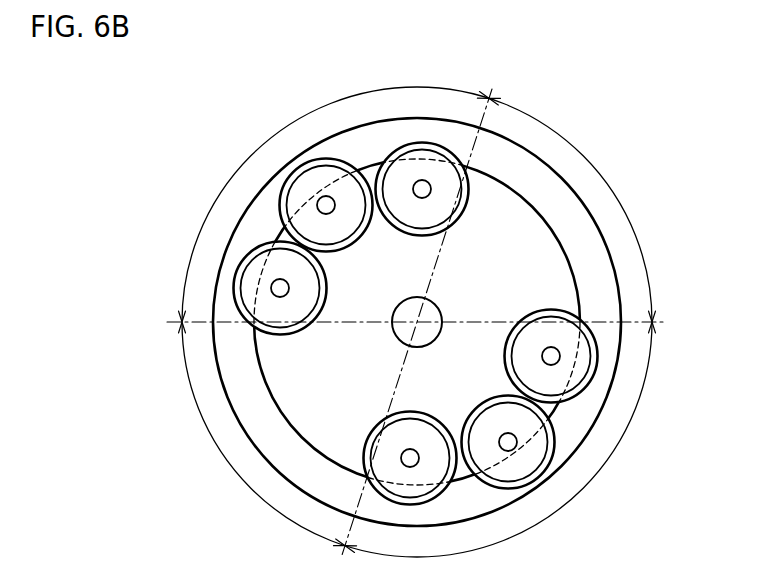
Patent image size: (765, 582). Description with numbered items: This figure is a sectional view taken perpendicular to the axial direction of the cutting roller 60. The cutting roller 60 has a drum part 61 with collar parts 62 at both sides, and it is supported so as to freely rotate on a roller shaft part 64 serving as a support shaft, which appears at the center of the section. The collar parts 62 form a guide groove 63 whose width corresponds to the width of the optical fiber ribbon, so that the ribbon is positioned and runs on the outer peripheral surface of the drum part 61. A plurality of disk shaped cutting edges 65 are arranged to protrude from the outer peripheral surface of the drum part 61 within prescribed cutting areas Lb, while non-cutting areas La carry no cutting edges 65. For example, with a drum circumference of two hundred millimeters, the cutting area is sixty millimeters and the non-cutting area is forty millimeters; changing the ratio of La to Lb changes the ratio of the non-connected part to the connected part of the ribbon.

The cutting roller 60 is at (592, 133).
The drum part 61 is at (258, 369).
The collar parts 62 is at (209, 308).
The guide groove 63 is at (267, 233).
The roller shaft part 64 is at (397, 336).
The cutting edges 65 is at (317, 160).